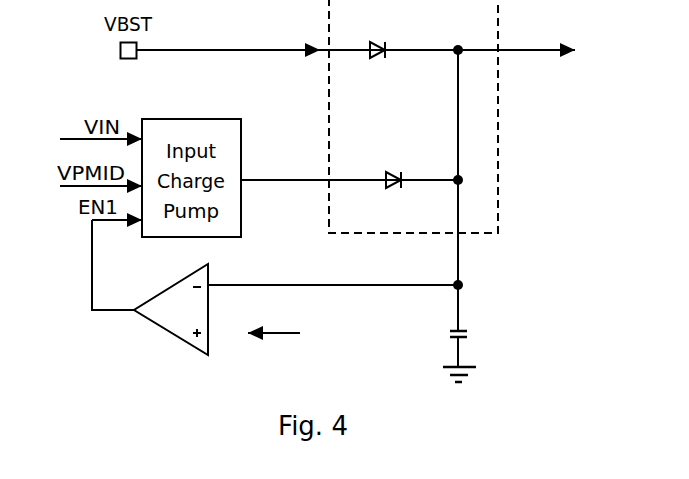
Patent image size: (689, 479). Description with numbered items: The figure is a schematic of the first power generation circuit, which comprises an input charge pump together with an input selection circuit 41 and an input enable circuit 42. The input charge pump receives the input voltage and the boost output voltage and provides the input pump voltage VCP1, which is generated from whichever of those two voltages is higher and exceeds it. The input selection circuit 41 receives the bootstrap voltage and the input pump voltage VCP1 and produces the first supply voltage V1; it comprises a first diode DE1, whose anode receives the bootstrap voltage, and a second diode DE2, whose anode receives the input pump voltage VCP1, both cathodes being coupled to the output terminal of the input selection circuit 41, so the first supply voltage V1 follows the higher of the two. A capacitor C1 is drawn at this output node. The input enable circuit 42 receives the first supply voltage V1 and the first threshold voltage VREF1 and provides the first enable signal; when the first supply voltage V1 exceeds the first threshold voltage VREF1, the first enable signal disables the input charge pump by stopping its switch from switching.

The input selection circuit 41 is at (408, 165).
The input enable circuit 42 is at (275, 287).
The capacitor C1 is at (483, 353).
The first diode DE1 is at (390, 40).
The second diode DE2 is at (402, 167).
The first supply voltage V1 is at (447, 36).
The input pump voltage VCP1 is at (349, 169).
The first threshold voltage VREF1 is at (272, 321).